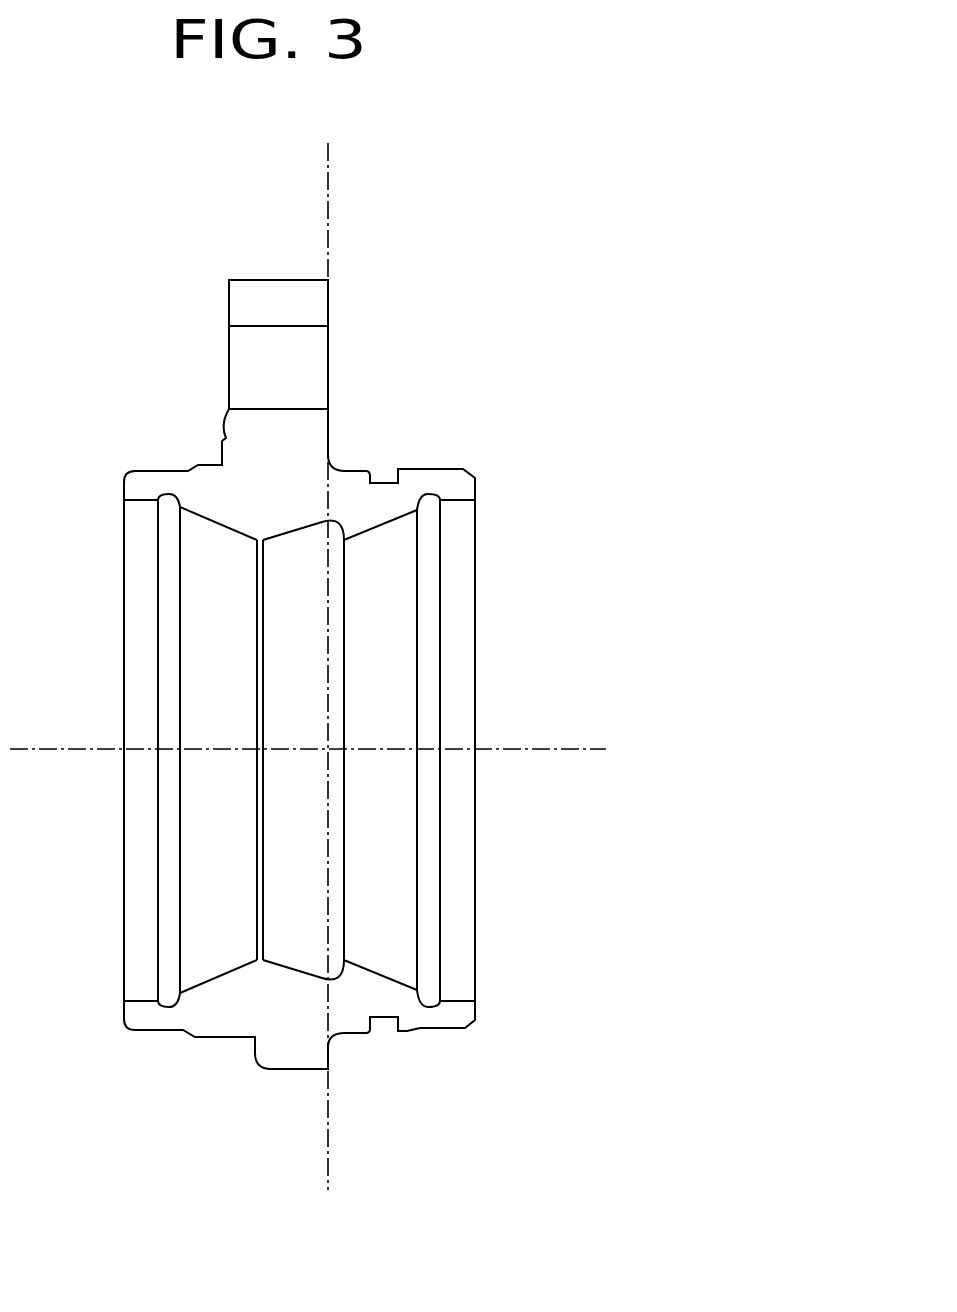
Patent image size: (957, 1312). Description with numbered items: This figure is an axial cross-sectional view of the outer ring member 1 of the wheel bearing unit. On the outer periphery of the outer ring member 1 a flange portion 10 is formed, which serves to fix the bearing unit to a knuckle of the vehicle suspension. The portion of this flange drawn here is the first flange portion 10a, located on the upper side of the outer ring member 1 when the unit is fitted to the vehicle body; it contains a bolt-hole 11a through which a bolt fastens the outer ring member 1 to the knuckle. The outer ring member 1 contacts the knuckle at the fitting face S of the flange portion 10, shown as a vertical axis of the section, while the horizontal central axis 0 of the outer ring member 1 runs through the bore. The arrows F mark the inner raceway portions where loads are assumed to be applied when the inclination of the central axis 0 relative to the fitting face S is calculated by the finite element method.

The outer ring member 1 is at (412, 405).
The flange portion 10 is at (220, 302).
The first flange portion 10a is at (243, 304).
The bolt-hole 11a is at (253, 381).
The fitting face S is at (328, 229).
The central axis 0 is at (62, 748).
The arrows indicating load application portions F is at (377, 530).